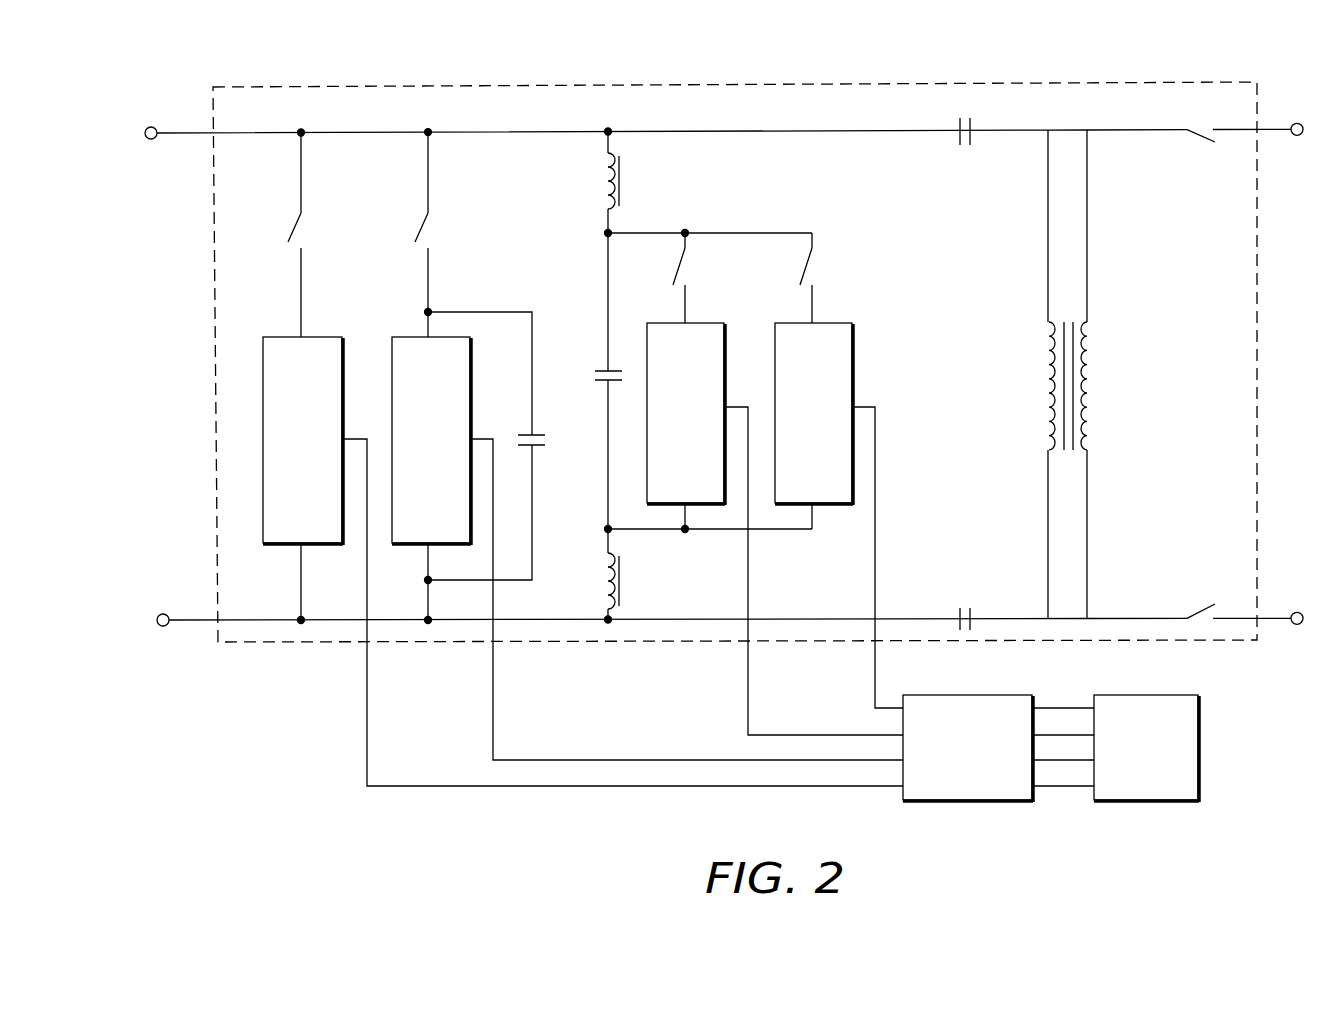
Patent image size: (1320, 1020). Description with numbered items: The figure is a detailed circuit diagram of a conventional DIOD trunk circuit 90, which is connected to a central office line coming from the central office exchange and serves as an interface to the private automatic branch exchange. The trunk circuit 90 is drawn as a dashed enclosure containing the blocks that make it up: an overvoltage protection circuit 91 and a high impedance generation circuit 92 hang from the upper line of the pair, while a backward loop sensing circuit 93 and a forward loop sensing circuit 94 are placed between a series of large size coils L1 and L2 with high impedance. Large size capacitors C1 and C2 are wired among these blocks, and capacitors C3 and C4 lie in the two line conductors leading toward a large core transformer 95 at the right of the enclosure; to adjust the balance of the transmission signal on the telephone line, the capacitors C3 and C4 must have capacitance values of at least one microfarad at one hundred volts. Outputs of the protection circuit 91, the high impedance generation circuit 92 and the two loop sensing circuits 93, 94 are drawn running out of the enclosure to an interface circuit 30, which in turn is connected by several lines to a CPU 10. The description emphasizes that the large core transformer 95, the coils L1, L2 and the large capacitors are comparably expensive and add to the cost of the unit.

The conventional DIOD trunk circuit 90 is at (477, 85).
The overvoltage protection circuit 91 is at (277, 337).
The high impedance generation circuit 92 is at (640, 446).
The backward loop sensing circuit 93 is at (710, 323).
The forward loop sensing circuit 94 is at (838, 323).
The large core transformer 95 is at (1066, 312).
The interface circuit 30 is at (965, 695).
The CPU 10 is at (1199, 752).
The large size coil L1 is at (597, 183).
The large size coil L2 is at (597, 574).
The large size capacitor C1 is at (505, 446).
The large size capacitor C2 is at (592, 381).
The capacitor C3 is at (968, 117).
The capacitor C4 is at (968, 605).